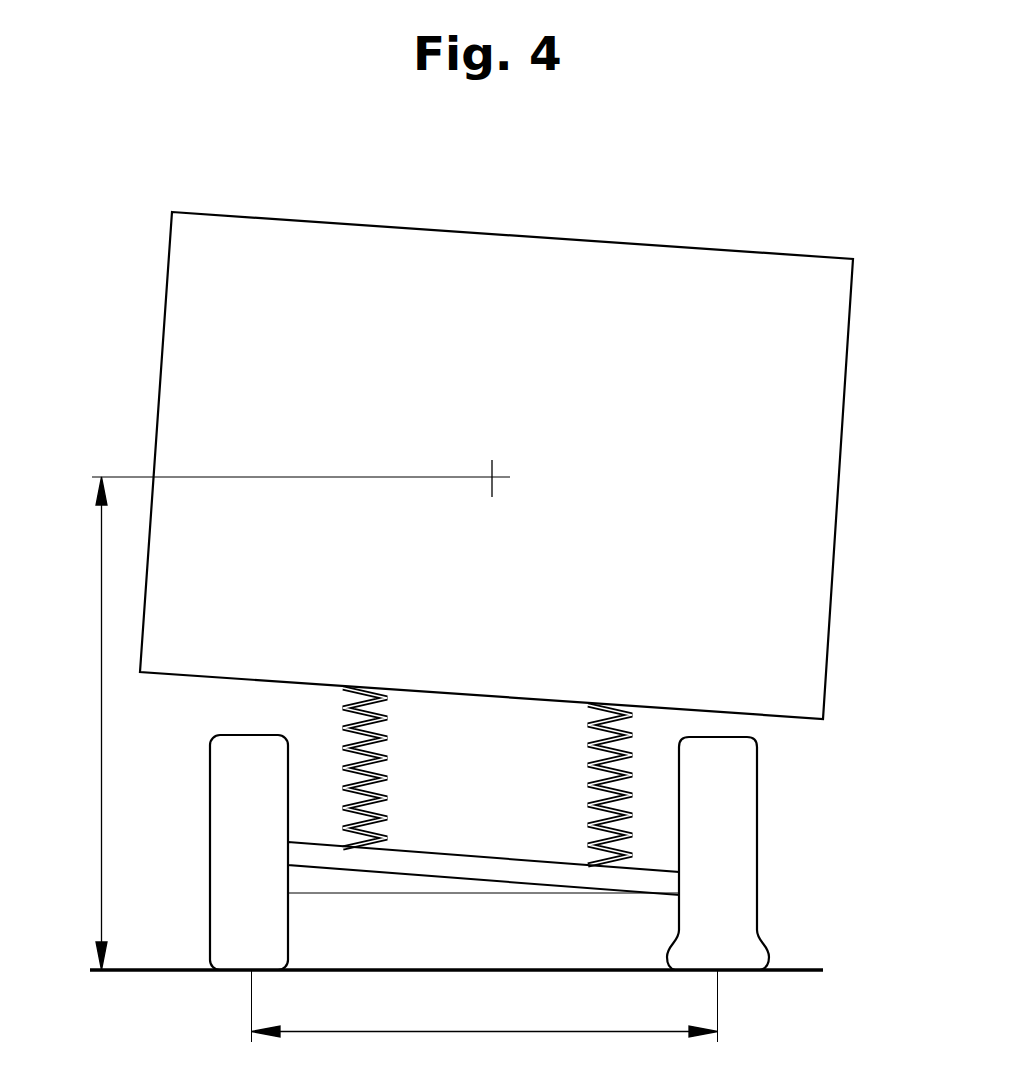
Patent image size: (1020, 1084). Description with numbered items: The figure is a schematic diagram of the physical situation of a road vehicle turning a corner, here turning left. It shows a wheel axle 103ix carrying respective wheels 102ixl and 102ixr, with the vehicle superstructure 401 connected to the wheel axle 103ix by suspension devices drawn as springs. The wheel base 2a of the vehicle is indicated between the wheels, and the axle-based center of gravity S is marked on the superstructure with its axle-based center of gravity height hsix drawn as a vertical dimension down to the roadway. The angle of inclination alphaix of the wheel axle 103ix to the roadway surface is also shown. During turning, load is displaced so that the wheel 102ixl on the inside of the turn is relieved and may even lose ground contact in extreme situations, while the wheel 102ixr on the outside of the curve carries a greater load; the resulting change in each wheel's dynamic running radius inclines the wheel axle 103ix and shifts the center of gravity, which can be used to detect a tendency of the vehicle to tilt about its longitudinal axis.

The vehicle superstructure 401 is at (810, 514).
The wheel on the inside of the turn 102ixl is at (223, 837).
The wheel on the outside of the curve 102ixr is at (745, 837).
The wheel axle 103ix is at (457, 867).
The axle-based center of gravity height hsix is at (279, 706).
The angle of inclination of the wheel axle alphaix is at (378, 873).
The wheel base 2a is at (485, 1006).